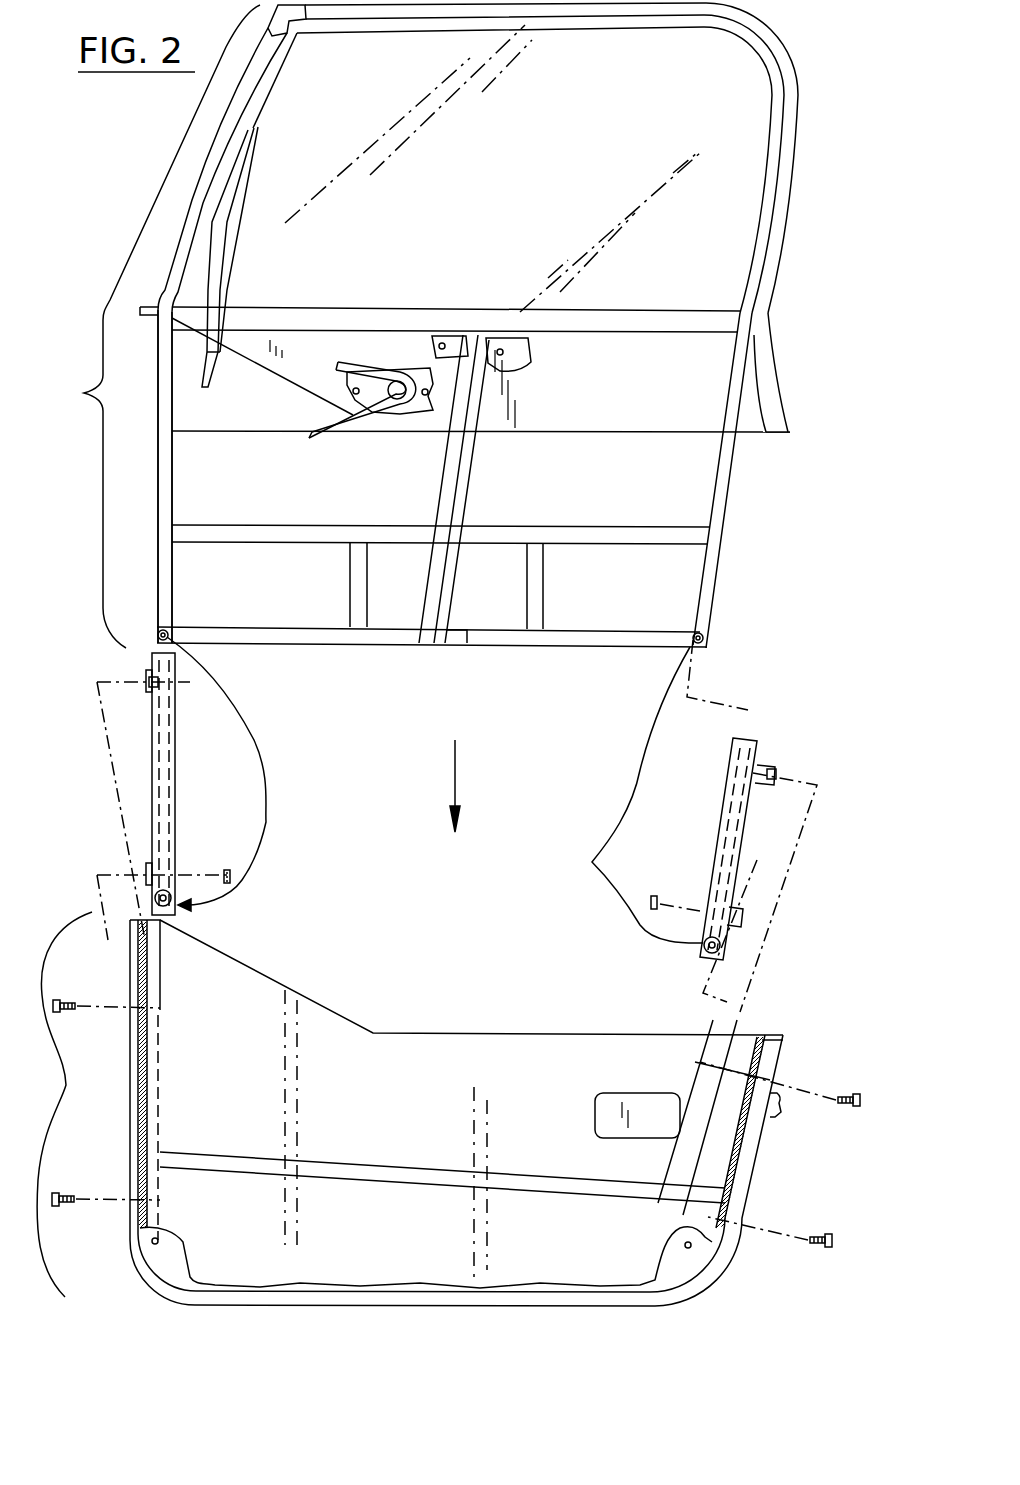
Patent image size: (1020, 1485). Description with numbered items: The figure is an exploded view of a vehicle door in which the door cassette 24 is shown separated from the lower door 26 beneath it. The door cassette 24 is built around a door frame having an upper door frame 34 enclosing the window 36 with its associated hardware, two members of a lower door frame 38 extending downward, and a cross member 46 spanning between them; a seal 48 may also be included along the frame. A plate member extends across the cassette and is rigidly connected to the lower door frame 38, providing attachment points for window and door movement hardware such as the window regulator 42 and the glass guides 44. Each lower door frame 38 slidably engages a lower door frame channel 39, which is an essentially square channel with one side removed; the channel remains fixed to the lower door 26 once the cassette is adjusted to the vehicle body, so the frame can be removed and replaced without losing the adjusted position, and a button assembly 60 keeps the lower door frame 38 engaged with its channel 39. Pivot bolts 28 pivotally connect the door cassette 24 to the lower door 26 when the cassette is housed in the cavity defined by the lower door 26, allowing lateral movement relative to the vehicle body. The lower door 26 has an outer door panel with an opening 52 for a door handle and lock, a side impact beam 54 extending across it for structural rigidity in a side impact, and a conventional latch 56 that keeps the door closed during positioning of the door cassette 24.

The door cassette 24 is at (149, 326).
The lower door 26 is at (404, 1109).
The pivot bolts 28 is at (53, 1000).
The upper door frame 34 is at (728, 32).
The window 36 is at (735, 78).
The lower door frame 38 is at (163, 425).
The lower door frame channel 39 is at (177, 755).
The window regulator 42 is at (388, 425).
The glass guides 44 is at (430, 587).
The cross member 46 is at (560, 640).
The seal 48 is at (765, 357).
The opening 52 is at (614, 1093).
The side impact beam 54 is at (195, 1160).
The latch 56 is at (780, 1100).
The button assembly 60 is at (435, 790).